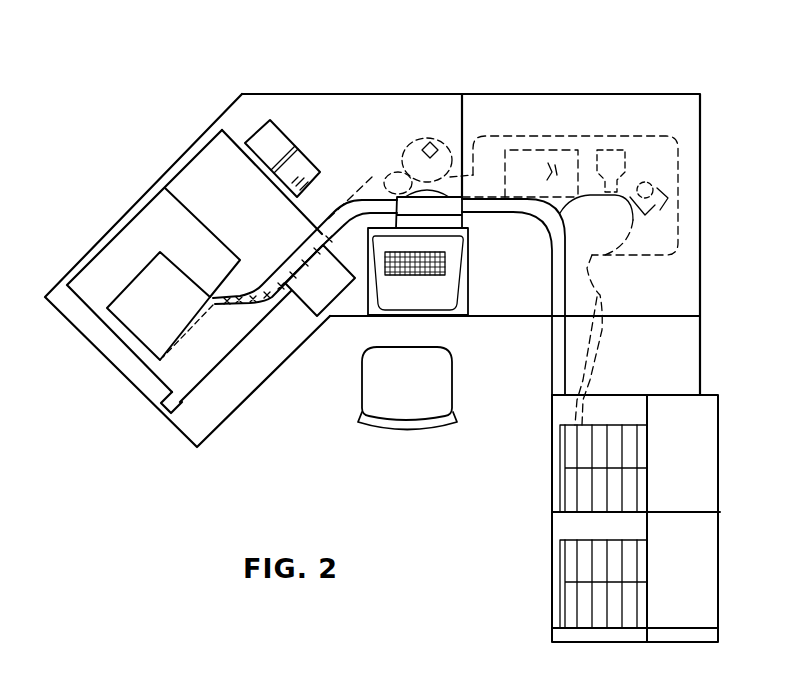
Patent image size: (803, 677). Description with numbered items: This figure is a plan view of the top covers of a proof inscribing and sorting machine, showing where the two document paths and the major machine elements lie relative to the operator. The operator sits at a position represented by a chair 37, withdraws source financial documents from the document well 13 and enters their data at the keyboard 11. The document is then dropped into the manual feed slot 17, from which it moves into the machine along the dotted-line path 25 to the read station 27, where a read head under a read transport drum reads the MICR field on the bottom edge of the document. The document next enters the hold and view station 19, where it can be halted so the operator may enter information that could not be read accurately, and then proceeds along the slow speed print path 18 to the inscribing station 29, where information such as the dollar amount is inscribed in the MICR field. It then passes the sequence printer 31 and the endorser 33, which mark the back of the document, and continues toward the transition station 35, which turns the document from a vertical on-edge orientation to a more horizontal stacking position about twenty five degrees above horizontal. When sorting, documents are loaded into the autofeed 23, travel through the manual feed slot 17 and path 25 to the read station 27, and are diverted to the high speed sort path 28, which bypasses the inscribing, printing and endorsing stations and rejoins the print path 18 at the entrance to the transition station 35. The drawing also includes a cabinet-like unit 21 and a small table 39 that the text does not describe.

The keyboard 11 is at (433, 275).
The document well 13 is at (302, 324).
The manual feed slot 17 is at (266, 258).
The slow speed print path 18 is at (490, 197).
The hold and view station 19 is at (427, 192).
The storage cabinet 21 is at (710, 407).
The autofeed 23 is at (157, 309).
The path 25 is at (372, 177).
The read station 27 is at (428, 140).
The high speed sort path 28 is at (553, 135).
The inscribing station 29 is at (537, 176).
The sequence printer 31 is at (612, 150).
The endorser 33 is at (662, 178).
The transition station 35 is at (614, 300).
The chair 37 is at (448, 373).
The table 39 is at (254, 132).